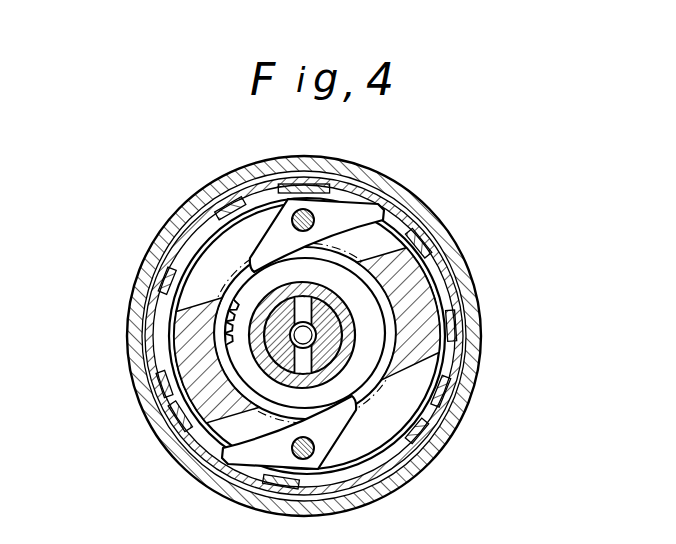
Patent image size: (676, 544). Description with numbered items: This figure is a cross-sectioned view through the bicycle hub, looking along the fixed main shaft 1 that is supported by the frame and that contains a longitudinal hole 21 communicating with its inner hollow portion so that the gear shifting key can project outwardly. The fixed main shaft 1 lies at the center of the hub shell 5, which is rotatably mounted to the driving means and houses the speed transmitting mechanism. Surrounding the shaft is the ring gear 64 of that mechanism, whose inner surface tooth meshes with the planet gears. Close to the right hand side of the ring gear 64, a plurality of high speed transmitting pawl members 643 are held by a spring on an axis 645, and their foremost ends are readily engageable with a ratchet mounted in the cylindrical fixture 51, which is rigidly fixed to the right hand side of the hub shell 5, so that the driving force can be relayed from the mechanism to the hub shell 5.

The fixed main shaft 1 is at (313, 341).
The hub shell 5 is at (172, 230).
The longitudinal hole 21 is at (245, 299).
The cylindrical fixture 51 is at (246, 197).
The ring gear 64 is at (410, 297).
The high speed transmitting pawl member 643 is at (358, 212).
The axis 645 is at (305, 209).